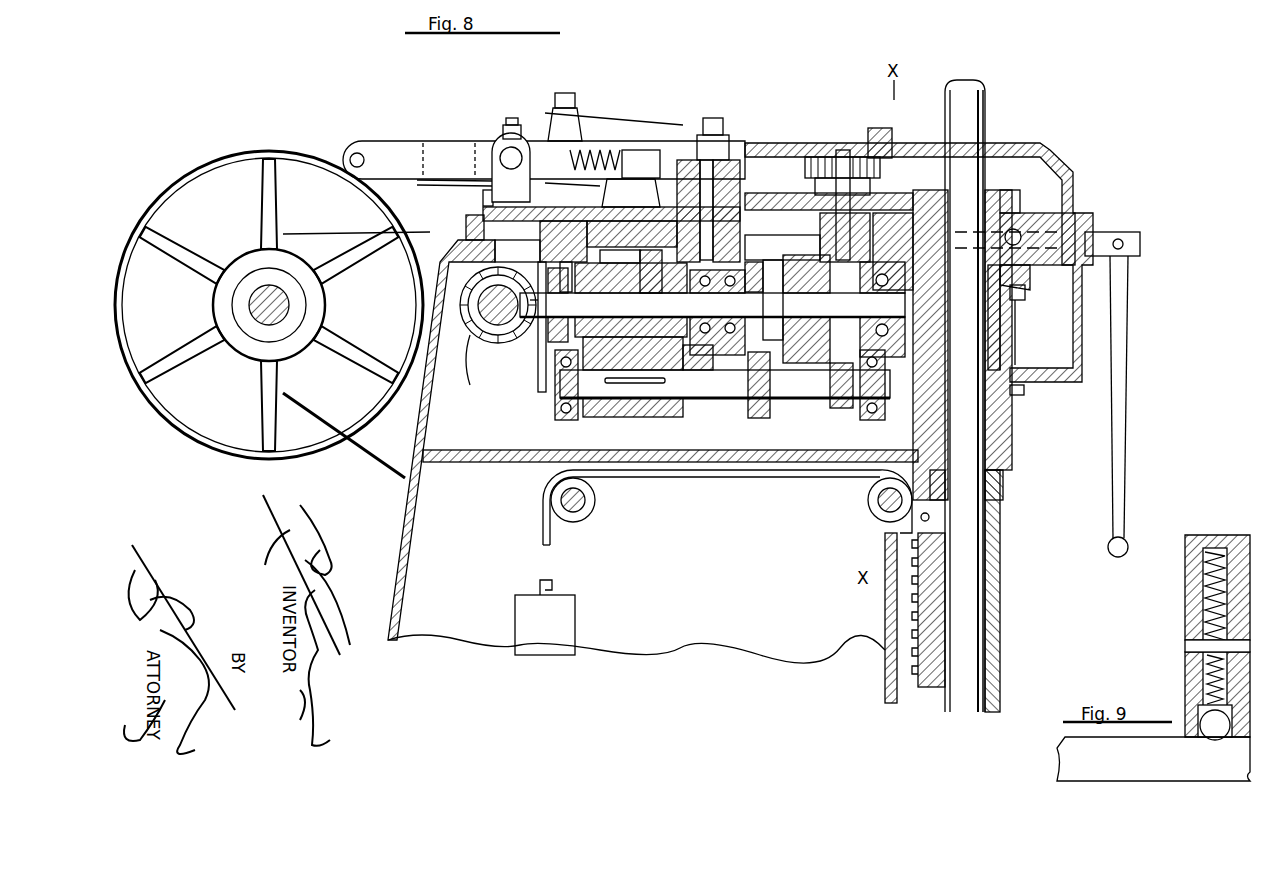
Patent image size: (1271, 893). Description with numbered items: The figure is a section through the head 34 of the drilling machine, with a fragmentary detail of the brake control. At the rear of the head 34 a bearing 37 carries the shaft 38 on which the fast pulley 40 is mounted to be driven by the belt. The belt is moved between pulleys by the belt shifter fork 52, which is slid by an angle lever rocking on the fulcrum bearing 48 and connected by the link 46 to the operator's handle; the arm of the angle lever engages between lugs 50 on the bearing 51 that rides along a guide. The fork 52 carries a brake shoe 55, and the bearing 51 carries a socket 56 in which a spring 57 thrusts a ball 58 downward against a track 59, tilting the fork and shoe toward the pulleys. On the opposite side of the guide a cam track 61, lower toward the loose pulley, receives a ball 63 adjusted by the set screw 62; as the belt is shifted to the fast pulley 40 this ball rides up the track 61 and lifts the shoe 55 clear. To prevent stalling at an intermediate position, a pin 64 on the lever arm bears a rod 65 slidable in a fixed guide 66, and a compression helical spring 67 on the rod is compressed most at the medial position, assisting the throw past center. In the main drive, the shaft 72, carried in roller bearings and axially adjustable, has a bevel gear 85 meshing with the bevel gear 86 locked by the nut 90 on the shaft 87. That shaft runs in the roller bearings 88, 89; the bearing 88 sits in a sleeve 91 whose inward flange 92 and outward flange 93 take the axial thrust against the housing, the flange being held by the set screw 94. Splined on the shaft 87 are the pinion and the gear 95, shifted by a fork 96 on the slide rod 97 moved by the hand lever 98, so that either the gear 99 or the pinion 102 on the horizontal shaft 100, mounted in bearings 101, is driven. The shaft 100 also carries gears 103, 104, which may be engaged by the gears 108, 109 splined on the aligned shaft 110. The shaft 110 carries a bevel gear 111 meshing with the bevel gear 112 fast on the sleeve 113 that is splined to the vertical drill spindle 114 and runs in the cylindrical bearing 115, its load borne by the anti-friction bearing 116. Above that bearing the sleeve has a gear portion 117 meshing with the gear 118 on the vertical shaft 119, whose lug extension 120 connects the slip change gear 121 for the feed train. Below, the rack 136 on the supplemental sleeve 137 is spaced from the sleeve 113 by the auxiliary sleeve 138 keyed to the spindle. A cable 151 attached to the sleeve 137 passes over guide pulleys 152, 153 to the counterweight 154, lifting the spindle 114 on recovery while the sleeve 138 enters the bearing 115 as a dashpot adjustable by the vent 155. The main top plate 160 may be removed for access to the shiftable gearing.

In FIG. 8, the head 34 is at (405, 518).
In FIG. 8, the bearing 37 is at (240, 368).
In FIG. 8, the shaft 38 is at (290, 303).
In FIG. 8, the fast pulley 40 is at (272, 153).
In FIG. 8, the link 46 is at (728, 135).
In FIG. 8, the fulcrum bearing 48 is at (715, 118).
In FIG. 8, the lugs 50 is at (510, 125).
In FIG. 9, the bearing 51 is at (1185, 645).
In FIG. 8, the belt shifter fork 52 is at (405, 160).
In FIG. 8, the brake shoe 55 is at (352, 146).
In FIG. 9, the socket 56 is at (1240, 531).
In FIG. 9, the spring 57 is at (1205, 600).
In FIG. 8, the ball 58 is at (560, 185).
In FIG. 8, the track 59 is at (560, 188).
In FIG. 8, the track 61 is at (483, 198).
In FIG. 9, the track 61 is at (1135, 745).
In FIG. 9, the set screw 62 is at (1207, 678).
In FIG. 8, the ball 63 is at (490, 184).
In FIG. 9, the ball 63 is at (1200, 726).
In FIG. 8, the pin 64 is at (578, 103).
In FIG. 8, the rod 65 is at (600, 150).
In FIG. 8, the guide 66 is at (644, 161).
In FIG. 8, the compression helical spring 67 is at (620, 150).
In FIG. 8, the shaft 72 is at (505, 290).
In FIG. 8, the bevel gear 85 is at (505, 349).
In FIG. 8, the bevel gear 86 is at (552, 330).
In FIG. 8, the shaft 87 is at (545, 360).
In FIG. 8, the roller bearing 88 is at (712, 313).
In FIG. 8, the roller bearing 89 is at (719, 312).
In FIG. 8, the nut 90 is at (510, 345).
In FIG. 8, the sleeve 91 is at (517, 242).
In FIG. 8, the flange 92 is at (570, 270).
In FIG. 8, the flange 93 is at (466, 230).
In FIG. 8, the set screw 94 is at (565, 262).
In FIG. 8, the gear 95 is at (660, 262).
In FIG. 8, the fork 96 is at (619, 265).
In FIG. 8, the slide rod 97 is at (1128, 218).
In FIG. 8, the hand lever 98 is at (1130, 385).
In FIG. 8, the gear 99 is at (600, 417).
In FIG. 8, the horizontal shaft 100 is at (700, 398).
In FIG. 8, the bearings 101 is at (862, 418).
In FIG. 8, the pinion 102 is at (668, 417).
In FIG. 8, the gear 103 is at (760, 418).
In FIG. 8, the gear 104 is at (838, 408).
In FIG. 8, the gear 108 is at (825, 262).
In FIG. 8, the gear 109 is at (785, 255).
In FIG. 8, the shaft 110 is at (770, 300).
In FIG. 8, the bevel gear 111 is at (895, 314).
In FIG. 8, the bevel gear 112 is at (1030, 281).
In FIG. 8, the sleeve 113 is at (1015, 300).
In FIG. 8, the drill spindle 114 is at (988, 106).
In FIG. 8, the cylindrical bearing 115 is at (1005, 345).
In FIG. 8, the anti-friction bearing 116 is at (1018, 228).
In FIG. 8, the gear portion 117 is at (1005, 200).
In FIG. 8, the gear 118 is at (900, 195).
In FIG. 8, the vertical shaft 119 is at (880, 130).
In FIG. 8, the lug extension 120 is at (815, 186).
In FIG. 8, the slip change gear 121 is at (880, 160).
In FIG. 8, the rack 136 is at (910, 610).
In FIG. 8, the supplemental sleeve 137 is at (998, 612).
In FIG. 8, the auxiliary sleeve 138 is at (1000, 440).
In FIG. 8, the cable 151 is at (540, 528).
In FIG. 8, the guide pulley 152 is at (868, 510).
In FIG. 8, the guide pulley 153 is at (585, 520).
In FIG. 8, the counterweight 154 is at (575, 596).
In FIG. 8, the adjustable vent 155 is at (1050, 146).
In FIG. 8, the main top plate 160 is at (1085, 205).